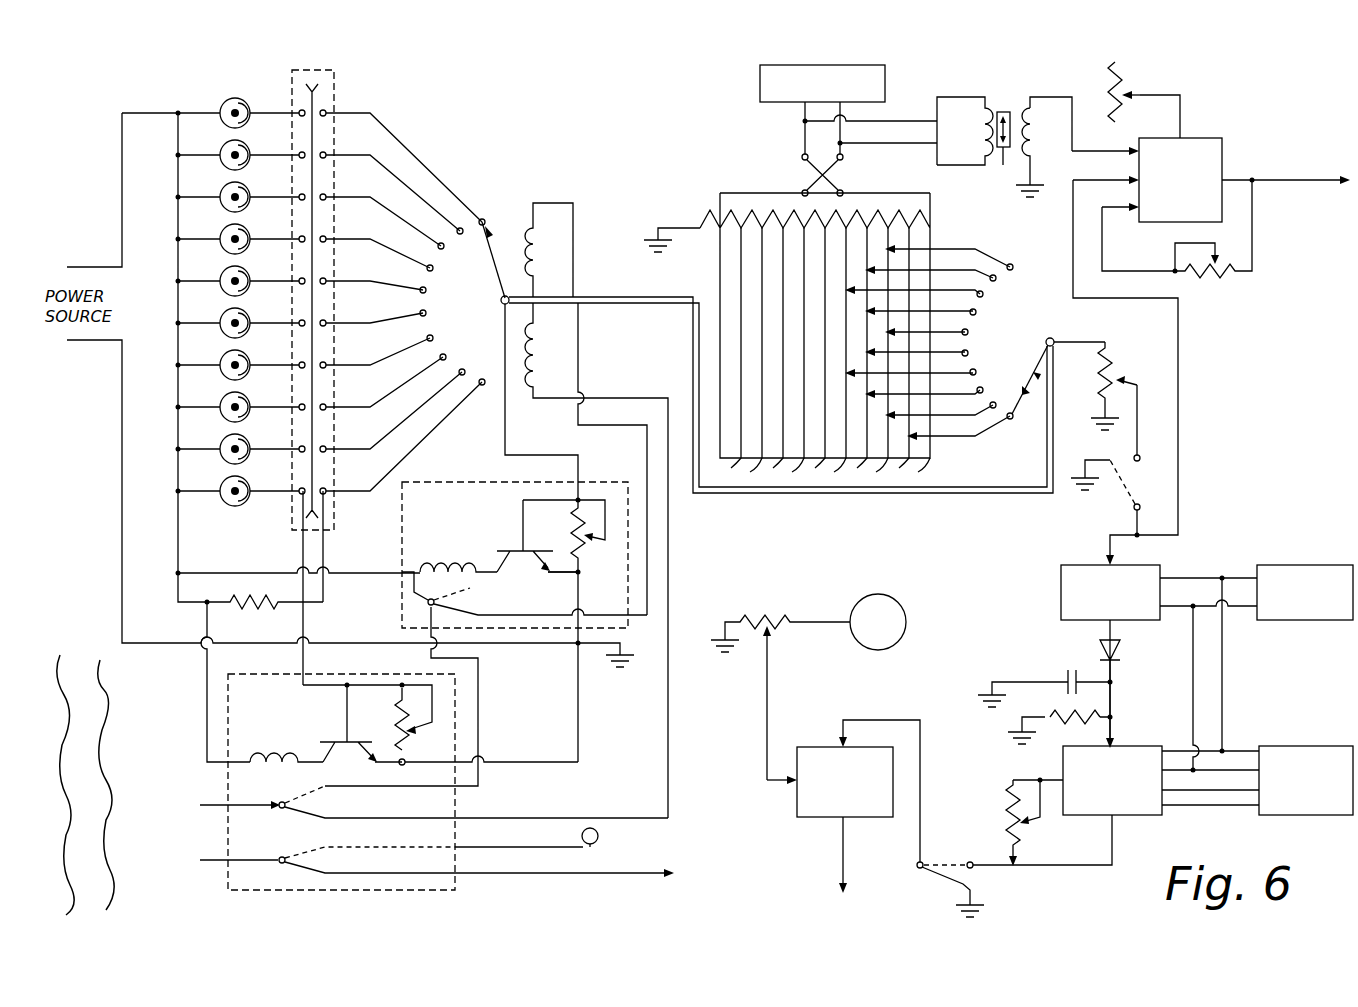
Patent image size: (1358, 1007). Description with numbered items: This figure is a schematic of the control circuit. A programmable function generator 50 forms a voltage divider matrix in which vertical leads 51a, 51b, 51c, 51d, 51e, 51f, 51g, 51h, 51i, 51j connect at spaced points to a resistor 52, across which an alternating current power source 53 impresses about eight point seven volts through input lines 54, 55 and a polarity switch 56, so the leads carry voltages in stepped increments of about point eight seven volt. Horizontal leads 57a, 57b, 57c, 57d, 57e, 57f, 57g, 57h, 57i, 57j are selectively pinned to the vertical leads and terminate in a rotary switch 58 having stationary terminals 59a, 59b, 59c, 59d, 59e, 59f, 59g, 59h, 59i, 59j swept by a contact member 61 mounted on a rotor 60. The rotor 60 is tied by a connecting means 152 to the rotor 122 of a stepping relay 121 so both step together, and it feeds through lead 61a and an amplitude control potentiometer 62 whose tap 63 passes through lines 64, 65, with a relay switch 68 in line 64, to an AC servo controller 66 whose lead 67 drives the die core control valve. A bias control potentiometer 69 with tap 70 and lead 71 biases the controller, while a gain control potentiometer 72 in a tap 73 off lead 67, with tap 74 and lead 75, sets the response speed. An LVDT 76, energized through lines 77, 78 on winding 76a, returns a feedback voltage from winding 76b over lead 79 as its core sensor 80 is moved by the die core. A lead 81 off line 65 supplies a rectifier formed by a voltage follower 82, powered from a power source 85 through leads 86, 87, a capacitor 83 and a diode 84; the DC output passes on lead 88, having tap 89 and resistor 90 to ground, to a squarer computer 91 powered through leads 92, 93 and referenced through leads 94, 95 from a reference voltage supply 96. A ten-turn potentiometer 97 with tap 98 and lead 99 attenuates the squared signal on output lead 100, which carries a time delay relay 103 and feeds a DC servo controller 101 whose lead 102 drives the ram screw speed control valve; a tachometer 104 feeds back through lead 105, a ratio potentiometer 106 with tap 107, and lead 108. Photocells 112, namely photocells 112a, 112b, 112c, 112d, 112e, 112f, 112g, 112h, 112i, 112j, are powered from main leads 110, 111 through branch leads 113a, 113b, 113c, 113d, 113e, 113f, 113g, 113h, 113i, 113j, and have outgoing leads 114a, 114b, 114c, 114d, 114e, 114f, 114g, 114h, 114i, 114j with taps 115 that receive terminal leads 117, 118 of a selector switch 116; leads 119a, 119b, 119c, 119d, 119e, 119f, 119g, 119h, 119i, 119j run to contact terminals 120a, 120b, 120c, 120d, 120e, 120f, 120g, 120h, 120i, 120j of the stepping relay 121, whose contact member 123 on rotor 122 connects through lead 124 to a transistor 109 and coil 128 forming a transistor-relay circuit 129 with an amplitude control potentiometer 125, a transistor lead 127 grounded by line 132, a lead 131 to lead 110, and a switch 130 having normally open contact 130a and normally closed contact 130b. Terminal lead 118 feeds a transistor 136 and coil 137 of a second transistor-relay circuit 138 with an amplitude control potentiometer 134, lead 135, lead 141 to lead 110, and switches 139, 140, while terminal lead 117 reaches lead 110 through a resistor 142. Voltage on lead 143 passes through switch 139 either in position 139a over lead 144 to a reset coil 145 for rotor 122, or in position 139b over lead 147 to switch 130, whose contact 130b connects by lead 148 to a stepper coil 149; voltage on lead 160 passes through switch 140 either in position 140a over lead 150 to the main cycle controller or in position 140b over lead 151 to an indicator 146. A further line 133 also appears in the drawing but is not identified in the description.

The thyristor bank 50 is at (719, 275).
The thyristor 51a is at (915, 475).
The thyristor 51b is at (895, 352).
The thyristor 51c is at (871, 360).
The thyristor 51d is at (852, 352).
The thyristor 51e is at (829, 360).
The thyristor 51f is at (810, 352).
The thyristor 51g is at (787, 360).
The thyristor 51h is at (767, 352).
The thyristor 51i is at (742, 360).
The thyristor 51j is at (722, 352).
The reversing switch contacts 52 is at (838, 212).
The A.C. power source 53 is at (759, 83).
The power lead 54 is at (803, 132).
The switch contact 55 is at (844, 155).
The switch contact 56 is at (801, 165).
The gate lead 57a is at (958, 428).
The gate lead 57b is at (939, 409).
The gate lead 57c is at (922, 388).
The gate lead 57d is at (909, 367).
The gate lead 57e is at (915, 346).
The gate lead 57f is at (925, 326).
The gate lead 57g is at (919, 305).
The gate lead 57h is at (912, 284).
The gate lead 57i is at (929, 266).
The gate lead 57j is at (947, 250).
The selector switch 58 is at (1023, 340).
The switch contact 59a is at (1020, 435).
The switch contact 59b is at (1008, 405).
The switch contact 59c is at (995, 384).
The switch contact 59d is at (992, 366).
The switch contact 59e is at (986, 346).
The switch contact 59f is at (986, 325).
The switch contact 59g is at (998, 305).
The switch contact 59h is at (1009, 288).
The switch contact 59i is at (1021, 269).
The switch contact 59j is at (1027, 253).
The switch pivot 60 is at (1054, 338).
The switch arm 61 is at (1034, 410).
The lead 61a is at (1091, 342).
The potentiometer 62 is at (1098, 370).
The potentiometer tap 63 is at (1136, 382).
The lead 64 is at (1138, 410).
The lead 65 is at (1187, 428).
The A.C. servo controller 66 is at (1144, 224).
The output to die core control valve 67 is at (1290, 184).
The switch 68 is at (1138, 488).
The potentiometer 69 is at (1107, 79).
The potentiometer tap 70 is at (1142, 88).
The lead 71 is at (1180, 117).
The potentiometer 72 is at (1214, 278).
The feedback lead 73 is at (1252, 233).
The potentiometer tap 74 is at (1224, 254).
The lead 75 is at (1124, 278).
The transformer 76 is at (1005, 97).
The primary winding 76a is at (965, 137).
The secondary winding 76b is at (1032, 156).
The lead 77 is at (917, 120).
The lead 78 is at (903, 146).
The lead 79 is at (1074, 144).
The transformer core 80 is at (1003, 168).
The lead 81 is at (1112, 534).
The voltage follower 82 is at (1061, 604).
The capacitor 83 is at (1062, 674).
The diode 84 is at (1125, 648).
The power source 85 is at (1282, 629).
The lead 86 is at (1192, 578).
The lead 87 is at (1184, 612).
The lead 88 is at (1110, 694).
The resistor 89 is at (1099, 723).
The lead 90 is at (1053, 706).
The squarer computer 91 is at (1130, 816).
The lead 92 is at (1182, 750).
The lead 93 is at (1240, 750).
The lead 94 is at (1176, 816).
The lead 95 is at (1233, 820).
The reference voltage 96 is at (1300, 816).
The potentiometer 97 is at (1006, 800).
The potentiometer tap 98 is at (1024, 827).
The lead 99 is at (1006, 842).
The lead 100 is at (1110, 838).
The D.C. servo controller 101 is at (797, 803).
The output to ram screw speed control valve 102 is at (843, 848).
The switch 103 is at (974, 878).
The tachometer 104 is at (900, 602).
The lead 105 is at (826, 622).
The potentiometer 106 is at (756, 616).
The potentiometer tap 107 is at (769, 644).
The lead 108 is at (769, 710).
The transistor 109 is at (505, 550).
The power lead 110 is at (178, 216).
The power lead 111 is at (122, 428).
The indicator lamps 112 is at (236, 100).
The lamp 112a is at (248, 114).
The lamp 112b is at (255, 156).
The lamp 112c is at (254, 198).
The lamp 112d is at (255, 240).
The lamp 112e is at (254, 282).
The lamp 112f is at (254, 324).
The lamp 112g is at (255, 366).
The lamp 112h is at (255, 408).
The lamp 112i is at (252, 450).
The lamp 112j is at (252, 492).
The lead 113a is at (208, 112).
The lead 113b is at (208, 154).
The lead 113c is at (208, 196).
The lead 113d is at (208, 238).
The lead 113e is at (208, 280).
The lead 113f is at (208, 322).
The lead 113g is at (208, 364).
The lead 113h is at (208, 406).
The lead 113i is at (208, 448).
The lead 113j is at (208, 490).
The lead 114a is at (277, 103).
The lead 114b is at (277, 145).
The lead 114c is at (277, 187).
The lead 114d is at (277, 229).
The lead 114e is at (277, 271).
The lead 114f is at (277, 313).
The lead 114g is at (277, 355).
The lead 114h is at (277, 397).
The lead 114i is at (277, 439).
The lead 114j is at (277, 481).
The relay armature 115 is at (318, 301).
The relay 116 is at (336, 80).
The lead 117 is at (325, 548).
The lead 118 is at (302, 548).
The lead 119a is at (374, 115).
The lead 119b is at (374, 157).
The lead 119c is at (374, 199).
The lead 119d is at (374, 241).
The lead 119e is at (374, 283).
The lead 119f is at (374, 325).
The lead 119g is at (374, 367).
The lead 119h is at (374, 409).
The lead 119i is at (374, 451).
The lead 119j is at (374, 493).
The switch contact 120a is at (486, 216).
The switch contact 120b is at (460, 236).
The switch contact 120c is at (441, 250).
The switch contact 120d is at (433, 270).
The switch contact 120e is at (426, 292).
The switch contact 120f is at (426, 314).
The switch contact 120g is at (433, 338).
The switch contact 120h is at (446, 356).
The switch contact 120i is at (465, 372).
The switch contact 120j is at (480, 386).
The switch arm 121 is at (503, 220).
The switch pivot 122 is at (509, 303).
The lead 123 is at (510, 284).
The lead 124 is at (508, 425).
The potentiometer 125 is at (572, 524).
The lead 127 is at (562, 574).
The relay coil 128 is at (440, 567).
The relay 129 is at (401, 613).
The relay armature 130 is at (418, 588).
The armature position 130a is at (470, 590).
The armature position 130b is at (540, 606).
The lead 131 is at (238, 568).
The lead 132 is at (580, 592).
The lead 133 is at (578, 717).
The potentiometer 134 is at (408, 738).
The contact 135 is at (402, 766).
The transistor 136 is at (374, 740).
The relay coil 137 is at (278, 759).
The relay 138 is at (332, 889).
The armature 139 is at (276, 810).
The contact 139a is at (318, 816).
The contact 139b is at (318, 790).
The armature 140 is at (276, 864).
The contact 140a is at (318, 874).
The contact 140b is at (318, 849).
The lead 141 is at (208, 670).
The resistor 142 is at (234, 610).
The input lead 143 is at (262, 784).
The lead 144 is at (474, 816).
The relay coil 145 is at (540, 355).
The connector 146 is at (600, 834).
The lead 147 is at (478, 720).
The lead 148 is at (595, 428).
The relay coil 149 is at (544, 254).
The output lead 150 is at (474, 871).
The lead 151 is at (474, 844).
The lead 152 is at (938, 497).
The input lead 160 is at (265, 840).